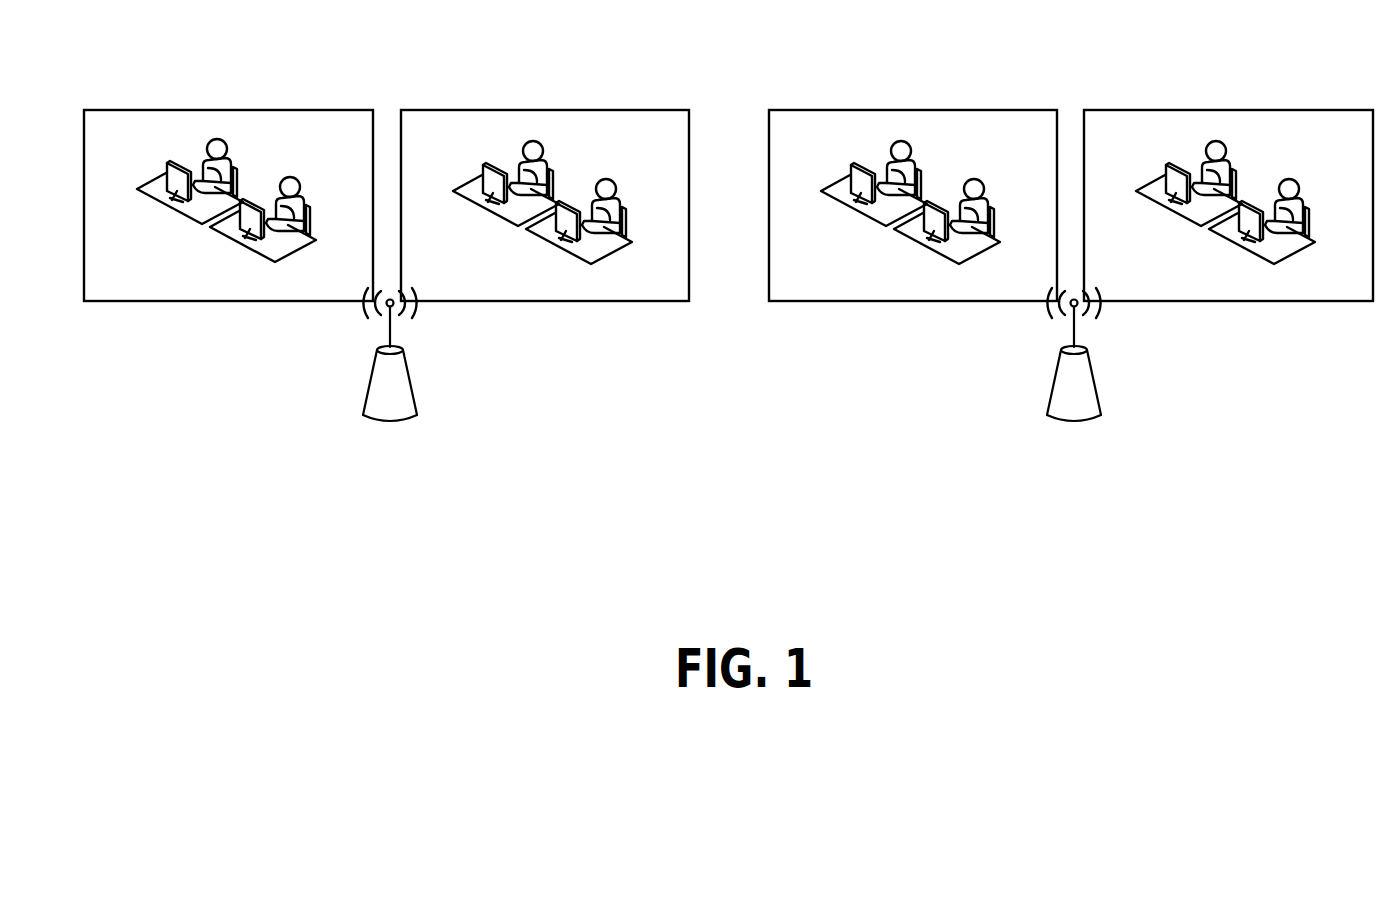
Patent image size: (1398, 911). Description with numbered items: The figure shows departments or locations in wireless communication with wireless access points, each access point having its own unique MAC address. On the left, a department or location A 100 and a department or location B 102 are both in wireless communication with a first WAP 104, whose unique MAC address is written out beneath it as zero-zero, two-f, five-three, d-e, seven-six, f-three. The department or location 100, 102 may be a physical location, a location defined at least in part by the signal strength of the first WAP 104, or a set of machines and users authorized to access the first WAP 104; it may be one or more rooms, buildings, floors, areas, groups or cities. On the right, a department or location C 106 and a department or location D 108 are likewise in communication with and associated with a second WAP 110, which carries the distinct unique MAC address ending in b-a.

The department or location A 100 is at (253, 110).
The department or location B 102 is at (583, 110).
The first WAP 104 is at (411, 377).
The department or location C 106 is at (958, 110).
The department or location D 108 is at (1203, 110).
The second WAP 110 is at (1094, 380).